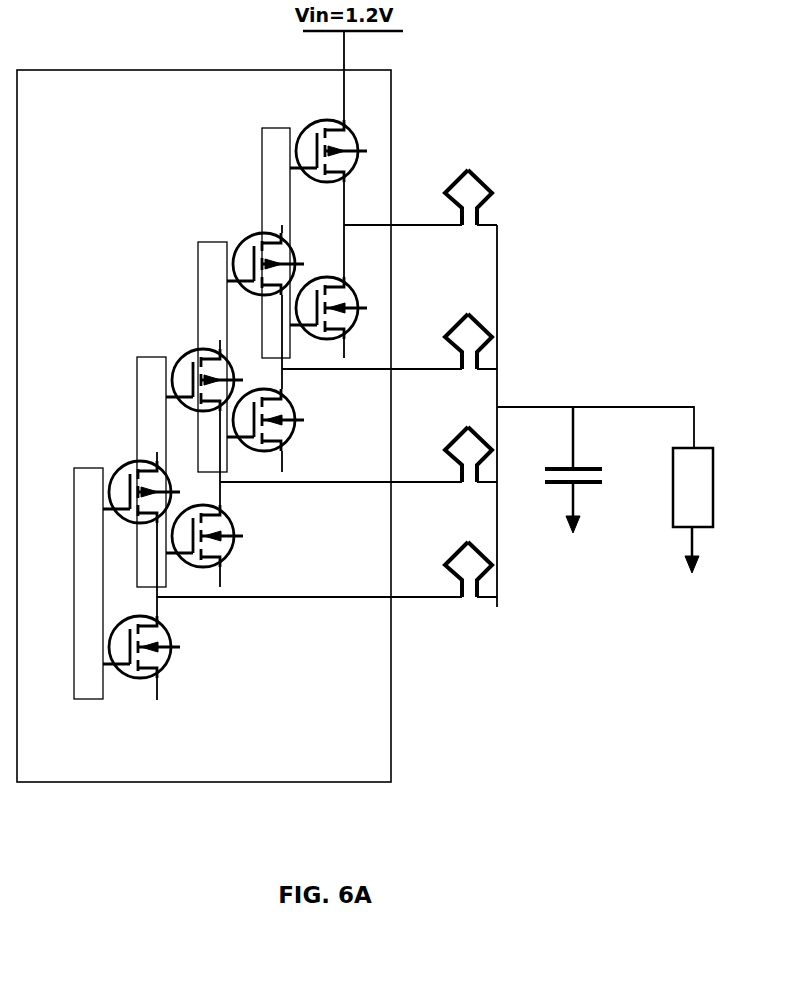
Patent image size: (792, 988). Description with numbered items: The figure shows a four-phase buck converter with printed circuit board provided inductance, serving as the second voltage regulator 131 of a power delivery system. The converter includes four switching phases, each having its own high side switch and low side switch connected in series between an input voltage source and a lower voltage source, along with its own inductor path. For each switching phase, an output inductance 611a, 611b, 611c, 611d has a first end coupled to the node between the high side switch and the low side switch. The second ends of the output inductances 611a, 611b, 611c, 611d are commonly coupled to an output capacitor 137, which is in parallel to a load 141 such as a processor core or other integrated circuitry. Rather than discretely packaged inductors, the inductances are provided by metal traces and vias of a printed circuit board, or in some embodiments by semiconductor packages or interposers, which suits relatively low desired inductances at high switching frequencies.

The second voltage regulator 131 is at (391, 712).
The output inductance 611a is at (482, 183).
The output inductance 611b is at (482, 325).
The output inductance 611c is at (482, 440).
The output inductance 611d is at (477, 552).
The output capacitor 137 is at (588, 467).
The load 141 is at (713, 490).